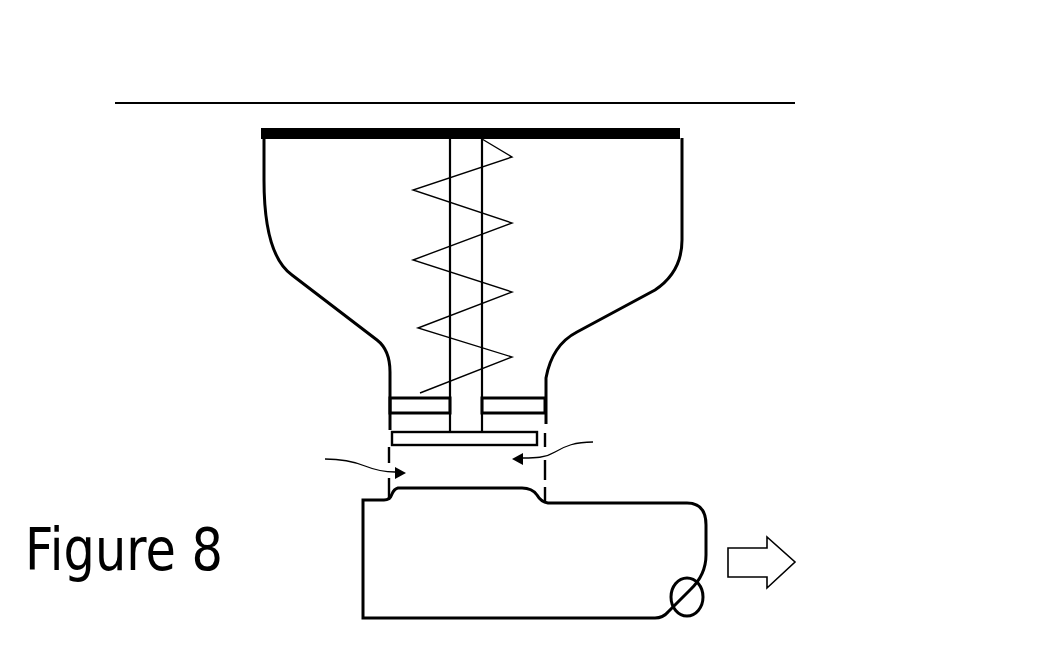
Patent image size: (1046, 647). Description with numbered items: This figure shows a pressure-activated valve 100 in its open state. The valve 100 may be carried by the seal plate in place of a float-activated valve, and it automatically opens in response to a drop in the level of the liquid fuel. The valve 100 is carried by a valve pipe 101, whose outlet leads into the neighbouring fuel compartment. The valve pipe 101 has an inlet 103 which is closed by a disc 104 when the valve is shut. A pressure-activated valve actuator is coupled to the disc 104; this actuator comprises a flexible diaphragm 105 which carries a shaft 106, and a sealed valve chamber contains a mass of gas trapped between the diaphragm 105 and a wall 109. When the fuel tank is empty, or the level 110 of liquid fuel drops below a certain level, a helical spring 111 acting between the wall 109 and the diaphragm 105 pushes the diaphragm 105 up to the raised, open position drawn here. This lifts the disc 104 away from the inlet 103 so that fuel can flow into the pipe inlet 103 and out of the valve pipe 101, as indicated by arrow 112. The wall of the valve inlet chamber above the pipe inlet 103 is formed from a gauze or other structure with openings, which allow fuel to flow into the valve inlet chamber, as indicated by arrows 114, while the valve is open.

The pressure-activated valve 100 is at (260, 310).
The valve pipe 101 is at (408, 565).
The inlet 103 is at (427, 482).
The disc 104 is at (465, 438).
The flexible diaphragm 105 is at (558, 140).
The shaft 106 is at (463, 228).
The wall 109 is at (507, 395).
The level of liquid fuel 110 is at (707, 103).
The helical spring 111 is at (413, 190).
The arrow 112 is at (747, 562).
The arrows 114 is at (338, 455).